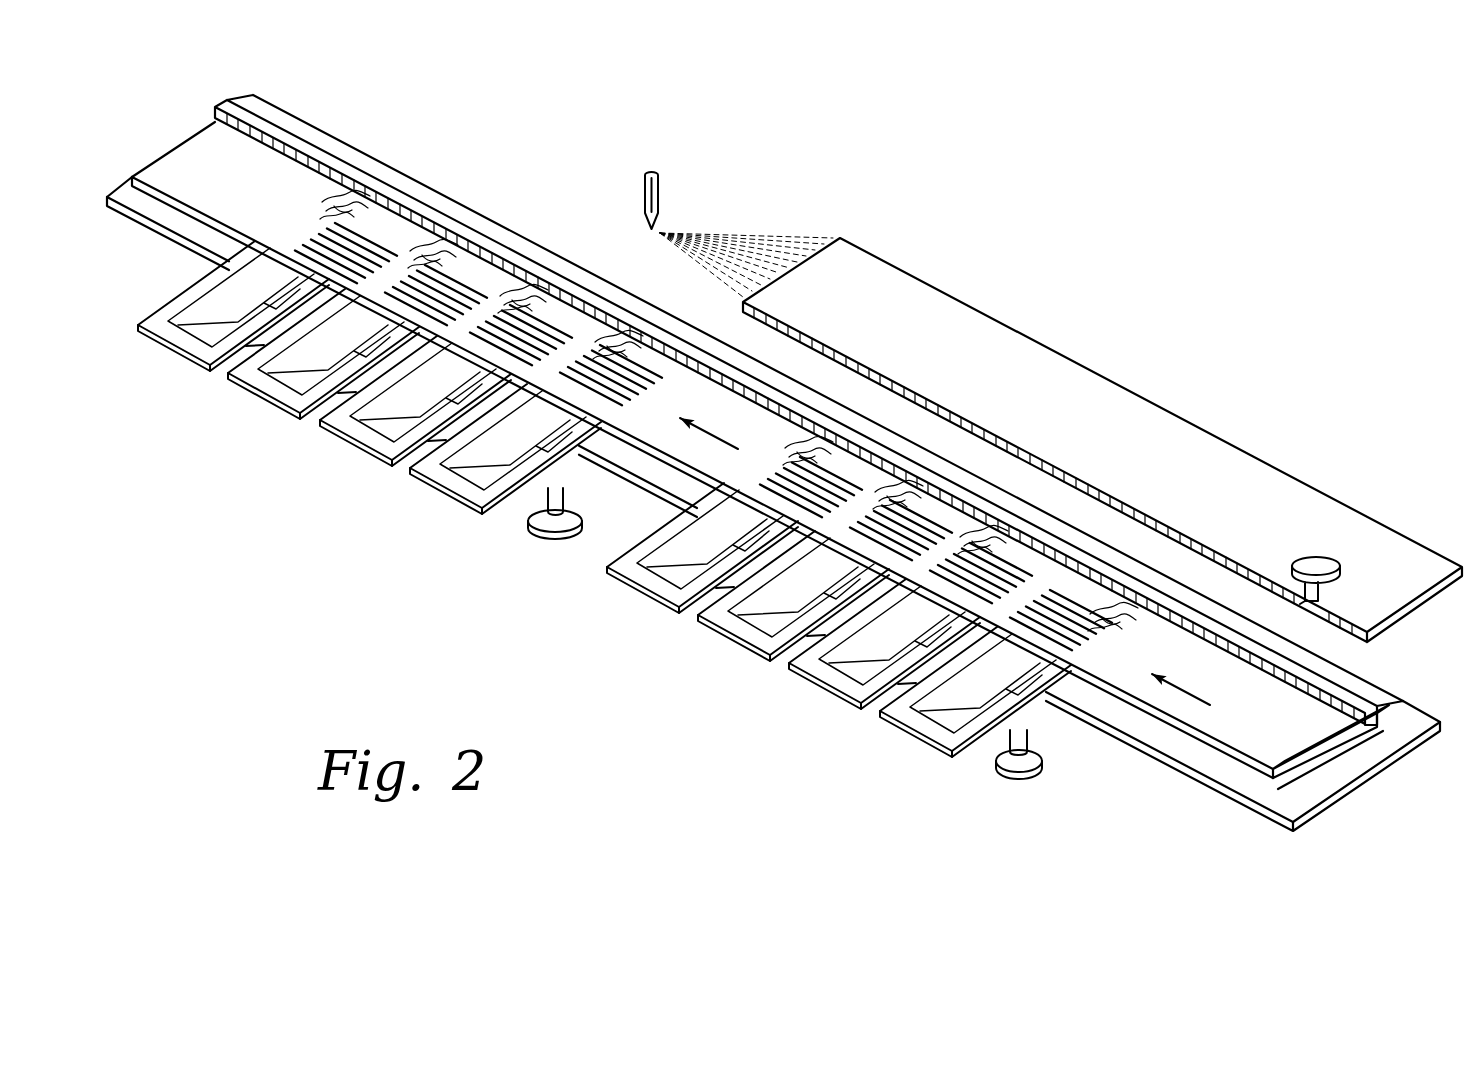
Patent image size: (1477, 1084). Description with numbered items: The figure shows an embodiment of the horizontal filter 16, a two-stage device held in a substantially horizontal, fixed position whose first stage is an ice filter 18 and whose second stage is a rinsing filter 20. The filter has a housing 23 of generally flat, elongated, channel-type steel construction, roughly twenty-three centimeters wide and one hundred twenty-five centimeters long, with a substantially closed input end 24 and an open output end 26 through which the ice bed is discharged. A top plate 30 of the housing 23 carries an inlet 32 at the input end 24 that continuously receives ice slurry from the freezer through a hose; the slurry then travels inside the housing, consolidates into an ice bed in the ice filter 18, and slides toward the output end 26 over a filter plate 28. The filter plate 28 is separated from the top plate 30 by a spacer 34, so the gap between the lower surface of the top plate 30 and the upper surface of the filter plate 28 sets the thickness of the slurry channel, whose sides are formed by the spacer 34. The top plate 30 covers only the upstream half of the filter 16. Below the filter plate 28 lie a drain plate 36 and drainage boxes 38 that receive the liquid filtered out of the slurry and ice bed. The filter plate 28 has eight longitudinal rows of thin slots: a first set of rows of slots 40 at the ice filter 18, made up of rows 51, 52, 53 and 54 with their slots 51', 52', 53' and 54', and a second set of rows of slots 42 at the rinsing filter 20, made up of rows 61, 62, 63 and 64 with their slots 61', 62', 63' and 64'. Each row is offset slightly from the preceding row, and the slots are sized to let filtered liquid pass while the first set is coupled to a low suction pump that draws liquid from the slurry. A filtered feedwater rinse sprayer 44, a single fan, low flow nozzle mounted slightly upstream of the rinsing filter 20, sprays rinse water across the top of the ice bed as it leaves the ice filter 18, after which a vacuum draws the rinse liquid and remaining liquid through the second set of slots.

The filter 16 is at (942, 180).
The ice filter 18 is at (855, 556).
The rinsing filter 20 is at (385, 310).
The housing 23 is at (1392, 664).
The input end 24 is at (1216, 708).
The output end 26 is at (212, 187).
The filter plate 28 is at (1240, 732).
The top plate 30 is at (1000, 322).
The inlet 32 is at (1321, 546).
The spacer 34 is at (450, 210).
The drain plate 36 is at (637, 460).
The drainage boxes 38 is at (376, 478).
The first set of rows of slots 40 is at (992, 590).
The second set of rows of slots 42 is at (446, 294).
The filtered feedwater rinse sprayer 44 is at (709, 224).
The row 51 is at (323, 245).
The slots 51' is at (330, 199).
The row 52 is at (414, 291).
The slots 52' is at (418, 248).
The row 53 is at (501, 335).
The slots 53' is at (508, 296).
The row 54 is at (593, 375).
The slots 54' is at (600, 343).
The row 61 is at (788, 484).
The slots 61' is at (793, 445).
The row 62 is at (879, 530).
The slots 62' is at (881, 492).
The row 63 is at (963, 573).
The slots 63' is at (970, 540).
The row 64 is at (1070, 636).
The slots 64' is at (1131, 629).